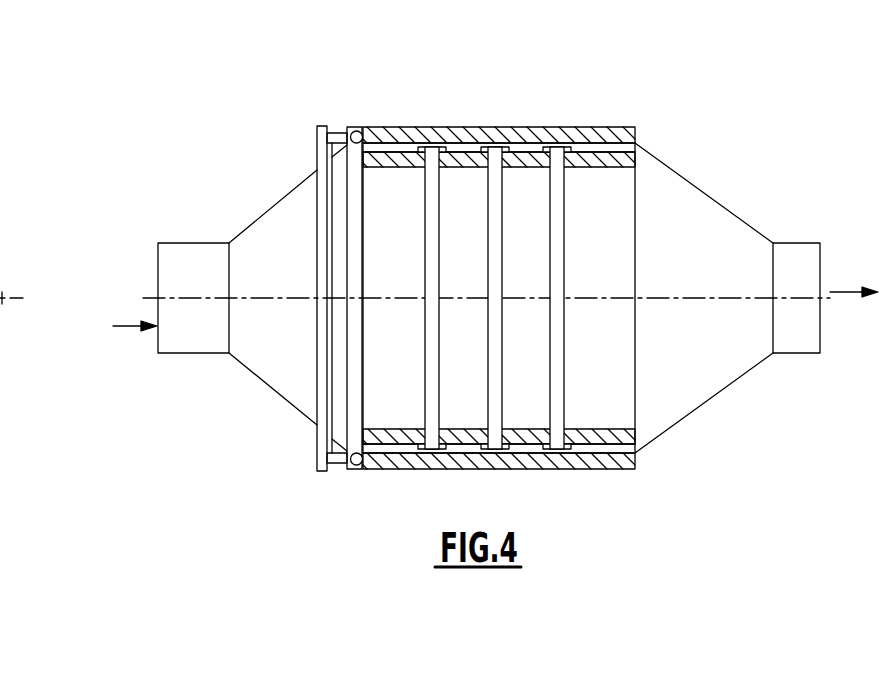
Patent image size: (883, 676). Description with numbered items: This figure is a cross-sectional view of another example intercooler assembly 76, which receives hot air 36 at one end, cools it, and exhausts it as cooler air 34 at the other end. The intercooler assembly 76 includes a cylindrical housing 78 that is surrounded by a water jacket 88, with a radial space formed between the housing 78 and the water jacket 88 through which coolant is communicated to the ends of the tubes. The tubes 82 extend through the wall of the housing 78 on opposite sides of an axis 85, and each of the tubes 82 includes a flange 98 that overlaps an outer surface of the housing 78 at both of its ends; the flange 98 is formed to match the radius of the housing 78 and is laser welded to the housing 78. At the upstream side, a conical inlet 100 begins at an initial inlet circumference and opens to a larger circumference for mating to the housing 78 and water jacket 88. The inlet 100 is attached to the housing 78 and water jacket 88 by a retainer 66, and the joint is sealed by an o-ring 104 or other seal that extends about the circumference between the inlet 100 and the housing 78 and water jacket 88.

The intercooler assembly 76 is at (512, 65).
The o-ring 104 is at (355, 130).
The flange 98 is at (447, 142).
The water jacket 88 is at (547, 138).
The cylindrical housing 78 is at (607, 162).
The retainer 66 is at (317, 155).
The tubes 82 is at (493, 253).
The axis 85 is at (726, 299).
The inlet 100 is at (278, 368).
The hot air 36 is at (128, 331).
The cooler air 34 is at (845, 292).